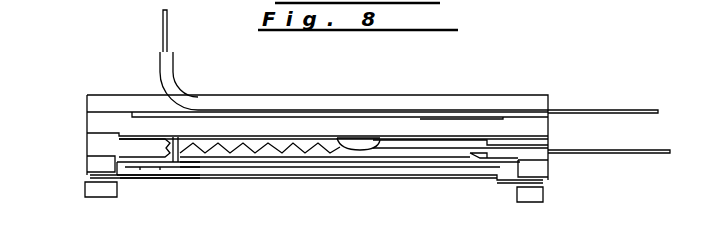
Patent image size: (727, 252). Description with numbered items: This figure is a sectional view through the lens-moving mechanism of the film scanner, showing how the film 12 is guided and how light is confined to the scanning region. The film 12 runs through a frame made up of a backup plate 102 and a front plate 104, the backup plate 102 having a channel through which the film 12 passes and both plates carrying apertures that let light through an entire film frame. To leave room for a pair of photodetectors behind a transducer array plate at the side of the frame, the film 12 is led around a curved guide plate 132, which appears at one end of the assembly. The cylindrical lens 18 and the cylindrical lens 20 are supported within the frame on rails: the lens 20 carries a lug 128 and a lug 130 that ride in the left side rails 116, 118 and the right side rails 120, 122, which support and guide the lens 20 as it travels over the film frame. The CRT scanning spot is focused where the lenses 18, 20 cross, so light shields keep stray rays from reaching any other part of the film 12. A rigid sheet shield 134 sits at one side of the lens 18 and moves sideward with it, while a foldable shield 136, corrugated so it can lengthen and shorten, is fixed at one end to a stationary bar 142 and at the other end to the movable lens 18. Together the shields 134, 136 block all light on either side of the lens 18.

The film 12 is at (168, 42).
The cylindrical lens 18 is at (370, 150).
The cylindrical lens 20 is at (345, 176).
The backup plate 102 is at (319, 104).
The front plate 104 is at (395, 90).
The left side rail 116 is at (90, 163).
The left side rail 118 is at (83, 197).
The right side rail 120 is at (545, 172).
The right side rail 122 is at (530, 197).
The lug 128 is at (135, 180).
The lug 130 is at (502, 183).
The curved guide plate 132 is at (180, 70).
The light shield 134 is at (445, 180).
The foldable light shield 136 is at (243, 160).
The stationary bar 142 is at (188, 158).